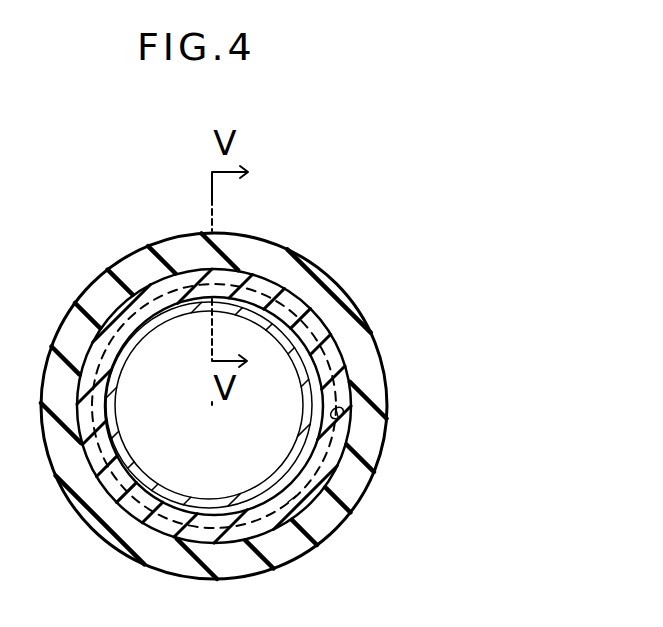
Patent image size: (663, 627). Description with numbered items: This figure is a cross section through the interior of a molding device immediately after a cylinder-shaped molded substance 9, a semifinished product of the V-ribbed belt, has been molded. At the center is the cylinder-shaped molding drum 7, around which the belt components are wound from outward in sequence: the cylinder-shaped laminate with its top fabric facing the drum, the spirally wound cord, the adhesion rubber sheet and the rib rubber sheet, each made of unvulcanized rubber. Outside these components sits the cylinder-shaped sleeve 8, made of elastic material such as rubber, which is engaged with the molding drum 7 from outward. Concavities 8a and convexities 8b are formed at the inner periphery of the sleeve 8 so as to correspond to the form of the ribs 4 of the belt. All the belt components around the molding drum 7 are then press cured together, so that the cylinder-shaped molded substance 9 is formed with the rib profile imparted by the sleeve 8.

The ribs 4 is at (350, 492).
The molding drum 7 is at (155, 334).
The sleeve 8 is at (380, 354).
The concavities 8a is at (345, 421).
The convexities 8b is at (292, 500).
The molded substance 9 is at (345, 318).